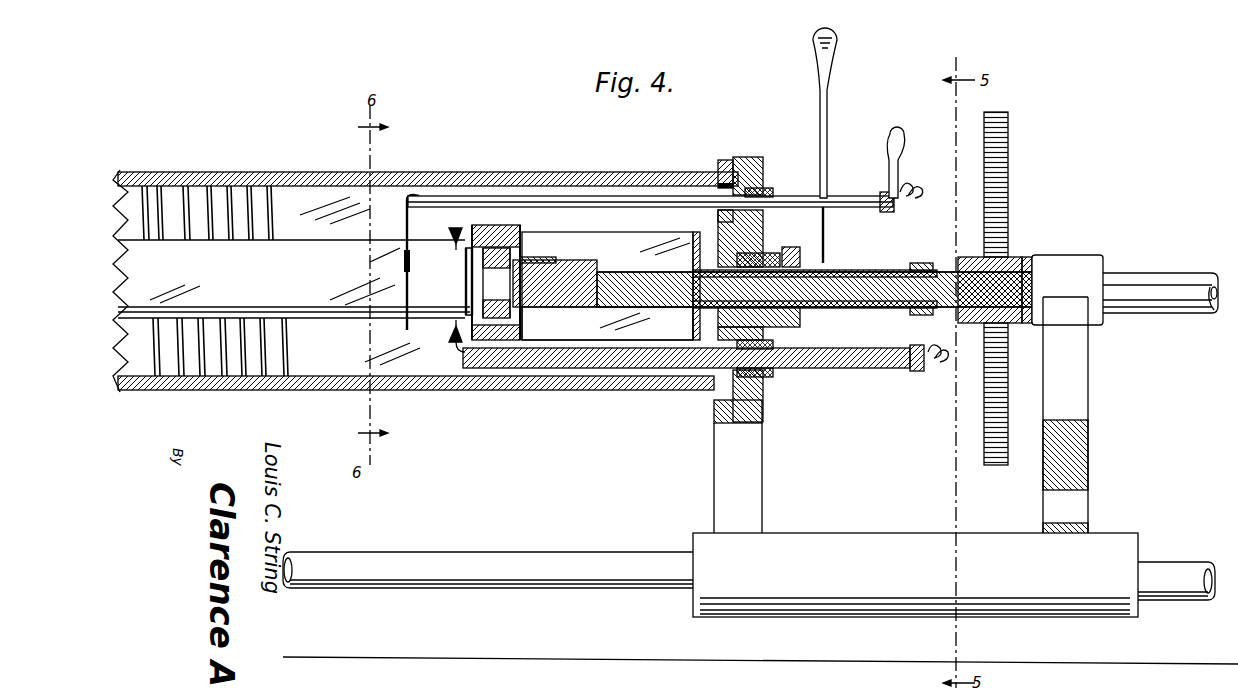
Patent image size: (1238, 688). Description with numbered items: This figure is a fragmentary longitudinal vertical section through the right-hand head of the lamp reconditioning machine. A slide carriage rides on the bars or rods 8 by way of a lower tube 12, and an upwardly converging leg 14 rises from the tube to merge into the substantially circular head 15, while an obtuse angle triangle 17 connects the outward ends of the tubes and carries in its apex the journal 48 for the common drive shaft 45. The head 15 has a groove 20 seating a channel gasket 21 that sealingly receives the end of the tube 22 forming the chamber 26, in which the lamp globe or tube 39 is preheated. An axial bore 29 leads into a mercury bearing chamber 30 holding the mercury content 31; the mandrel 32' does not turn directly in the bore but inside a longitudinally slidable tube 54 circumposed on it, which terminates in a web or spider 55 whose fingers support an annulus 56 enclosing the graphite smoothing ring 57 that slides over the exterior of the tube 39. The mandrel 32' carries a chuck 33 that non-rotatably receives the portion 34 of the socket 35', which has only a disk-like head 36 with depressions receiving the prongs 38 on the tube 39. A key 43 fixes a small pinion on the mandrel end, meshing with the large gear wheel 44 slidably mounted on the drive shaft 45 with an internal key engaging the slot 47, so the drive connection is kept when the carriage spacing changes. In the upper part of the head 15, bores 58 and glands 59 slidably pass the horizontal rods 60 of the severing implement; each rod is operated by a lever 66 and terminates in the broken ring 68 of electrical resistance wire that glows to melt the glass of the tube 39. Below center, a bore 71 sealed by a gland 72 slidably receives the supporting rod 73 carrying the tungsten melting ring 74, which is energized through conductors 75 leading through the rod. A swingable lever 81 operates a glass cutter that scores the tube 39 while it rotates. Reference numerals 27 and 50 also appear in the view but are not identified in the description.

The rod 8 is at (520, 555).
The lower tube 12 is at (822, 540).
The leg 14 is at (750, 482).
The head 15 is at (745, 157).
The obtuse angle triangle 17 is at (1103, 395).
The groove 20 is at (725, 162).
The channel gasket 21 is at (718, 186).
The tube 22 is at (470, 172).
The chamber 26 is at (291, 187).
The fins 27 is at (215, 195).
The axial bore 29 is at (765, 236).
The mercury bearing chamber 30 is at (800, 318).
The mercury content 31 is at (800, 252).
The mandrel 32' is at (819, 279).
The chuck 33 is at (560, 268).
The portion of socket 34 is at (570, 306).
The socket 35' is at (538, 248).
The disk-like head 36 is at (455, 352).
The prongs 38 is at (465, 262).
The lamp tube 39 is at (320, 241).
The key 43 is at (1010, 258).
The gear wheel 44 is at (1010, 144).
The common drive shaft 45 is at (1146, 273).
The slot 47 is at (1176, 285).
The journal 48 is at (1078, 256).
The collar 50 is at (1028, 258).
The slidable tube 54 is at (882, 270).
The web or spider 55 is at (740, 240).
The annulus 56 is at (508, 228).
The graphite smoothing ring 57 is at (490, 250).
The bore 58 is at (718, 216).
The gland 59 is at (770, 192).
The horizontal rod 60 is at (845, 198).
The lever 66 is at (896, 138).
The broken ring 68 is at (404, 262).
The bore 71 is at (773, 342).
The gland 72 is at (765, 376).
The supporting rod 73 is at (860, 368).
The tungsten melting ring 74 is at (409, 212).
The conductors 75 is at (930, 368).
The swingable lever 81 is at (827, 92).